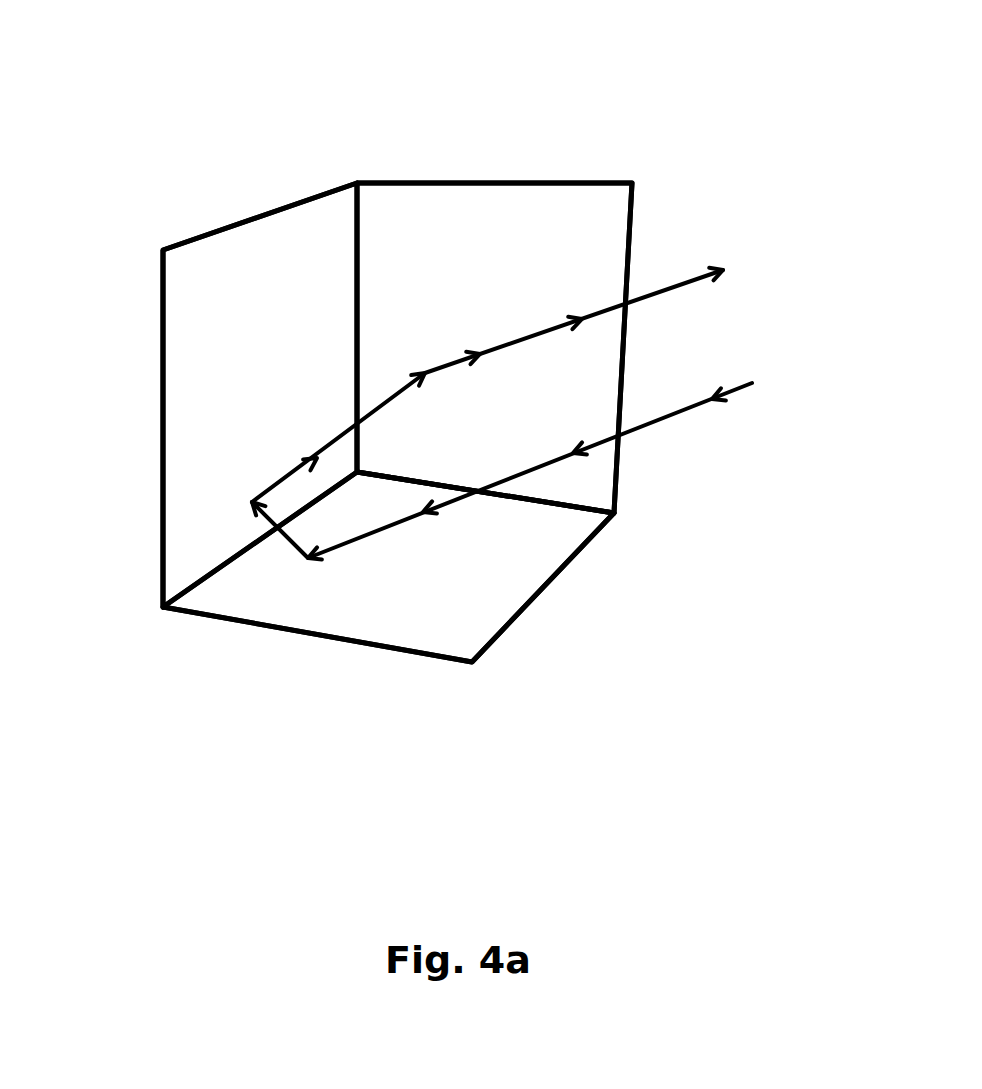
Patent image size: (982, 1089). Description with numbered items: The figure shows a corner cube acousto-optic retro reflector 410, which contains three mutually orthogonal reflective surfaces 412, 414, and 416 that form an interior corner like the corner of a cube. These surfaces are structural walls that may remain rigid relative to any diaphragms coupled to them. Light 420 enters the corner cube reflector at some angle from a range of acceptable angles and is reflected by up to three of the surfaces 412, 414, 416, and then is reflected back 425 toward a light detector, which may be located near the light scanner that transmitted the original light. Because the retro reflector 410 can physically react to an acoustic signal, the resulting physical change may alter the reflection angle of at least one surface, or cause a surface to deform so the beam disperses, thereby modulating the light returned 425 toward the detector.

The corner cube acousto-optic retro reflector 410 is at (357, 183).
The reflective surface 412 is at (530, 252).
The reflective surface 414 is at (237, 412).
The reflective surface 416 is at (442, 603).
The light 420 is at (673, 417).
The reflected light 425 is at (663, 287).